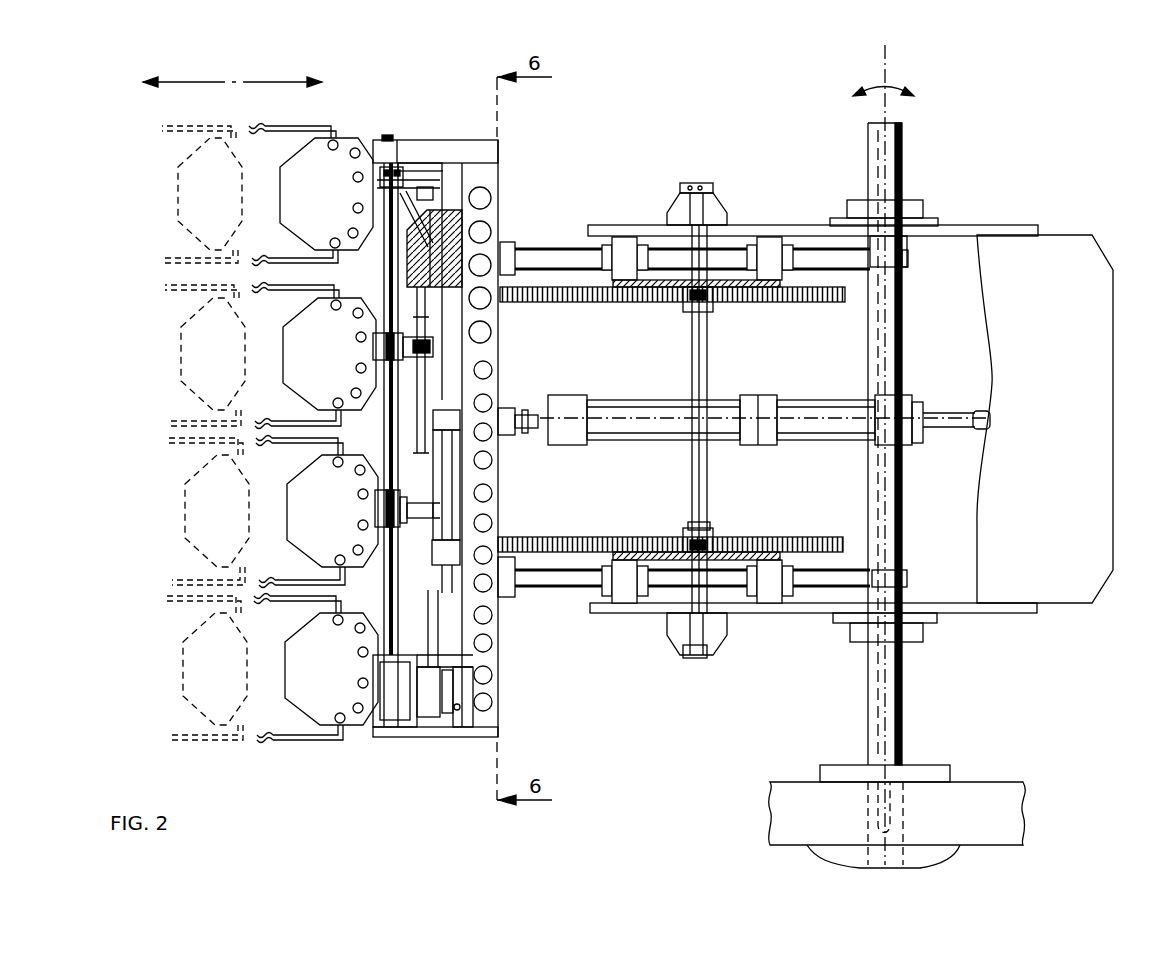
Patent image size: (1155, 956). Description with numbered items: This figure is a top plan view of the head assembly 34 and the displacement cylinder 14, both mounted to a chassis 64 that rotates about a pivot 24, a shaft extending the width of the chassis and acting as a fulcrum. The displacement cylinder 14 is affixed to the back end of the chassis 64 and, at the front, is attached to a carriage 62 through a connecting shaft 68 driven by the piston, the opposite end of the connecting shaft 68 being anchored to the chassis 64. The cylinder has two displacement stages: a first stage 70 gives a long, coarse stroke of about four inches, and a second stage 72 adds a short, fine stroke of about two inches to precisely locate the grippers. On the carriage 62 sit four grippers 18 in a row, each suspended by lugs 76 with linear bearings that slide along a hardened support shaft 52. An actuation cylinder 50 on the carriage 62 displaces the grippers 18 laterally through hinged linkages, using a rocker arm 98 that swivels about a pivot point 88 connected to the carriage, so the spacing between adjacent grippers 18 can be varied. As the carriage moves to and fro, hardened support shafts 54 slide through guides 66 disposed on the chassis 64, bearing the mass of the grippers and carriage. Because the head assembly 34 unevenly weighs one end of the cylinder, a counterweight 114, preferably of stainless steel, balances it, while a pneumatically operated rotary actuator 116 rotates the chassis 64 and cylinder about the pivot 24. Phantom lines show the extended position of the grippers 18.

The displacement cylinder 14 is at (765, 419).
The gripper 18 is at (347, 135).
The pivot 24 is at (900, 160).
The head assembly 34 is at (311, 748).
The actuation cylinder 50 is at (482, 480).
The hardened support shaft 52 is at (387, 733).
The hardened support shaft 54 is at (813, 245).
The carriage 62 is at (422, 140).
The chassis 64 is at (992, 225).
The guide 66 is at (628, 238).
The connecting shaft 68 is at (520, 408).
The first stage 70 is at (630, 424).
The second stage 72 is at (808, 424).
The lug 76 is at (488, 156).
The pivot point 88 is at (462, 660).
The rocker arm 98 is at (447, 712).
The counterweight 114 is at (1077, 243).
The rotary actuator 116 is at (980, 783).